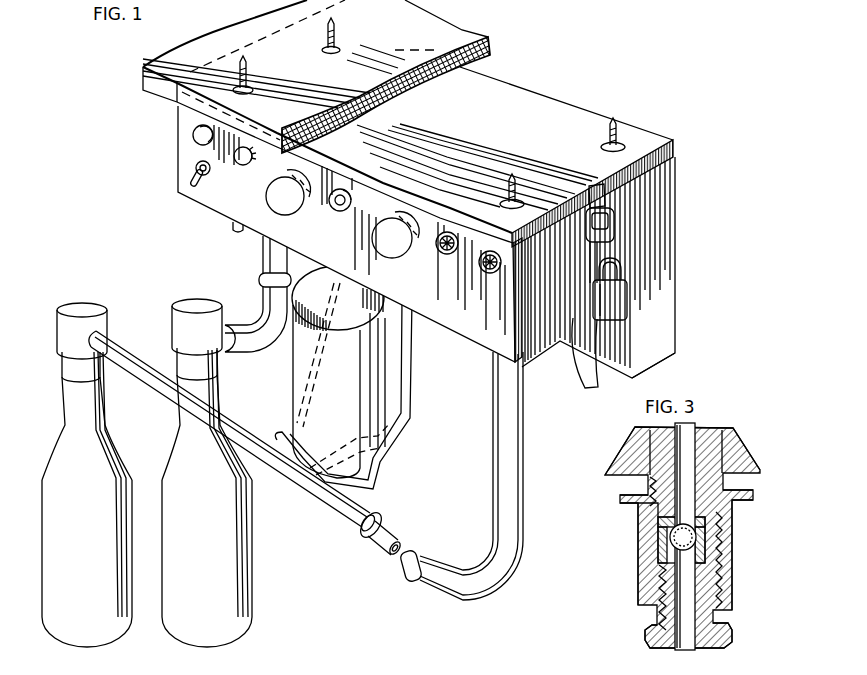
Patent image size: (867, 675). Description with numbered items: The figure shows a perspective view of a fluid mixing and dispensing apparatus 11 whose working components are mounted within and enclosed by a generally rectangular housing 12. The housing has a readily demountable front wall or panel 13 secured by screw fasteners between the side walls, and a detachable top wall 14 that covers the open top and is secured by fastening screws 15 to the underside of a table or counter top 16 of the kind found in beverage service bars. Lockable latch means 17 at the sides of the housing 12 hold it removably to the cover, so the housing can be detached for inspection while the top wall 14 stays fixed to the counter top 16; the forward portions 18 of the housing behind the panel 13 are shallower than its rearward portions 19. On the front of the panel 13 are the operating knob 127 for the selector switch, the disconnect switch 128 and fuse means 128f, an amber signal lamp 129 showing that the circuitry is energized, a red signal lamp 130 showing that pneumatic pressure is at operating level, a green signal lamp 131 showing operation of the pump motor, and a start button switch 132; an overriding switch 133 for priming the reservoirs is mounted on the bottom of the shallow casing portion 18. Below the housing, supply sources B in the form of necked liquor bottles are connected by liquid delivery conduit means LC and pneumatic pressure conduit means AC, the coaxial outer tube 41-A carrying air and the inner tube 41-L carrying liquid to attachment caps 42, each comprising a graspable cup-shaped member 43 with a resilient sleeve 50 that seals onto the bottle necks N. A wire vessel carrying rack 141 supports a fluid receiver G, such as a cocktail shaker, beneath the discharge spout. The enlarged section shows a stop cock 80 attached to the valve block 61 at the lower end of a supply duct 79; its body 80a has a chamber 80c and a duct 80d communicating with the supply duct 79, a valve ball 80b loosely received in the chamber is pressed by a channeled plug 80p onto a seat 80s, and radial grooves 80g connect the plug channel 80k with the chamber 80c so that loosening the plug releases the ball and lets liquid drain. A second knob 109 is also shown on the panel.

In FIG. 1, the fluid mixing and dispensing apparatus 11 is at (149, 130).
In FIG. 1, the housing 12 is at (680, 300).
In FIG. 1, the front wall or panel 13 is at (470, 325).
In FIG. 1, the detachable top wall 14 is at (552, 100).
In FIG. 1, the fastening screws 15 is at (338, 29).
In FIG. 1, the table or counter top 16 is at (455, 28).
In FIG. 1, the lockable latch means 17 is at (614, 246).
In FIG. 1, the forward portions of the housing 18 is at (540, 351).
In FIG. 1, the rearward portions of the housing 19 is at (663, 357).
In FIG. 1, the attachment caps 42 is at (53, 321).
In FIG. 1, the cup-shaped member 43 is at (68, 336).
In FIG. 1, the sleeve of resilient rubber-like material 50 is at (72, 367).
In FIG. 1, the bottle necks N is at (98, 405).
In FIG. 1, the fluid supply source B is at (137, 464).
In FIG. 1, the pneumatic pressure conduit means AC is at (314, 481).
In FIG. 1, the outer tube 41-A is at (355, 525).
In FIG. 1, the inner tube 41-L is at (407, 557).
In FIG. 1, the liquid delivery conduit means LC is at (405, 570).
In FIG. 1, the stop cock 80 is at (418, 346).
In FIG. 3, the stop cock 80 is at (678, 530).
In FIG. 1, the fluid receiver G is at (366, 377).
In FIG. 1, the vessel carrying rack 141 is at (407, 405).
In FIG. 1, the control knob 109 is at (397, 250).
In FIG. 1, the operating knob 127 is at (266, 196).
In FIG. 1, the disconnect switch 128 is at (193, 180).
In FIG. 1, the fuse means 128f is at (237, 163).
In FIG. 1, the amber signal lamp 129 is at (194, 137).
In FIG. 1, the red signal lamp 130 is at (448, 256).
In FIG. 1, the green signal lamp 131 is at (490, 275).
In FIG. 1, the start button switch 132 is at (337, 210).
In FIG. 1, the overriding switch 133 is at (238, 234).
In FIG. 3, the block 61 is at (640, 452).
In FIG. 3, the supply duct 79 is at (689, 440).
In FIG. 3, the body 80a is at (650, 514).
In FIG. 3, the valve ball 80b is at (697, 541).
In FIG. 3, the chamber 80c is at (665, 537).
In FIG. 3, the duct 80d is at (690, 483).
In FIG. 3, the radial grooves 80g is at (720, 560).
In FIG. 3, the channel of the plug 80k is at (690, 588).
In FIG. 3, the channeled plug 80p is at (708, 620).
In FIG. 3, the seat 80s is at (705, 518).